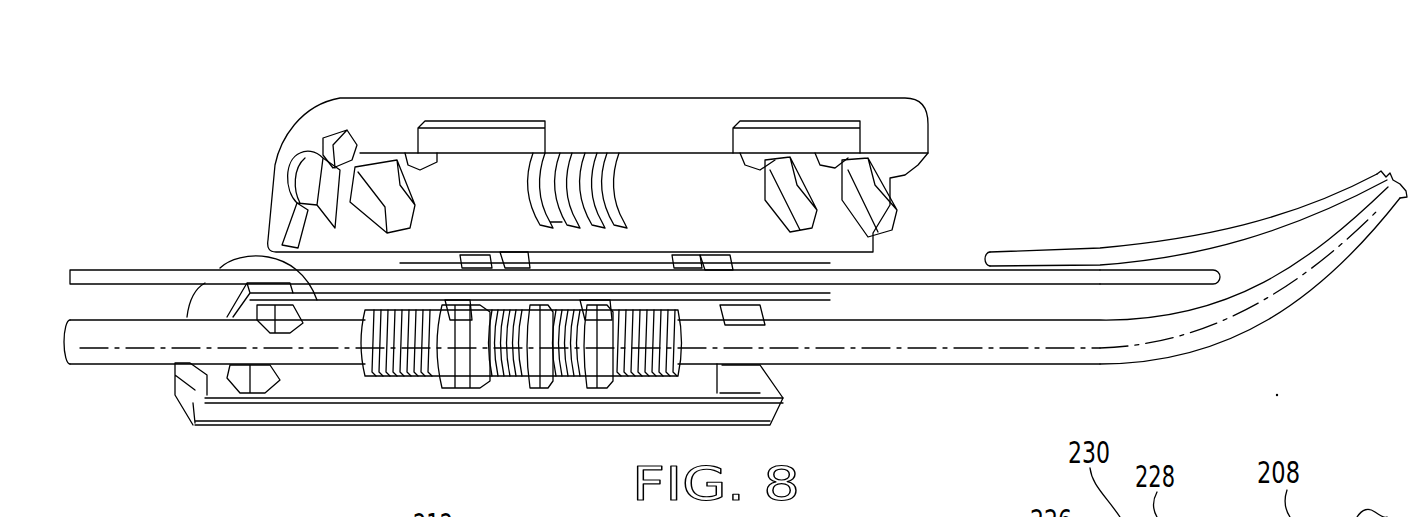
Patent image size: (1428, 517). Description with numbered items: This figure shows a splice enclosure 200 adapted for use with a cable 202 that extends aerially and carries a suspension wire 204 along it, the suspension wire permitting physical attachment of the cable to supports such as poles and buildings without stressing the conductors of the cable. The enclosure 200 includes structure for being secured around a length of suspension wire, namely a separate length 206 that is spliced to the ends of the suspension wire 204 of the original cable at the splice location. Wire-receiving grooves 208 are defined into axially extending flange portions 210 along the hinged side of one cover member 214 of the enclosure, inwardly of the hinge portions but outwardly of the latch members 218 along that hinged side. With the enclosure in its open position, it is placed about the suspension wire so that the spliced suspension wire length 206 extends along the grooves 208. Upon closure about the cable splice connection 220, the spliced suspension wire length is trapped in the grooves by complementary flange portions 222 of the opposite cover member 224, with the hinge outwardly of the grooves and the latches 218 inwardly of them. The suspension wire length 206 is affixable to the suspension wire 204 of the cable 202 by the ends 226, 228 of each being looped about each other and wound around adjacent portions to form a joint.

The splice enclosure 200 is at (191, 124).
The cable 202 is at (1316, 273).
The suspension wire 204 is at (1355, 208).
The separate length of suspension wire 206 is at (942, 280).
The wire-receiving grooves 208 is at (352, 308).
The axially extending flange portions 210 is at (473, 265).
The cover member 214 is at (177, 392).
The latch members 218 is at (283, 258).
The cable splice connection 220 is at (497, 377).
The complementary flange portions 222 is at (445, 240).
The opposite cover member 224 is at (614, 133).
The end of suspension wire length 226 is at (1080, 280).
The end of suspension wire 228 is at (1165, 252).